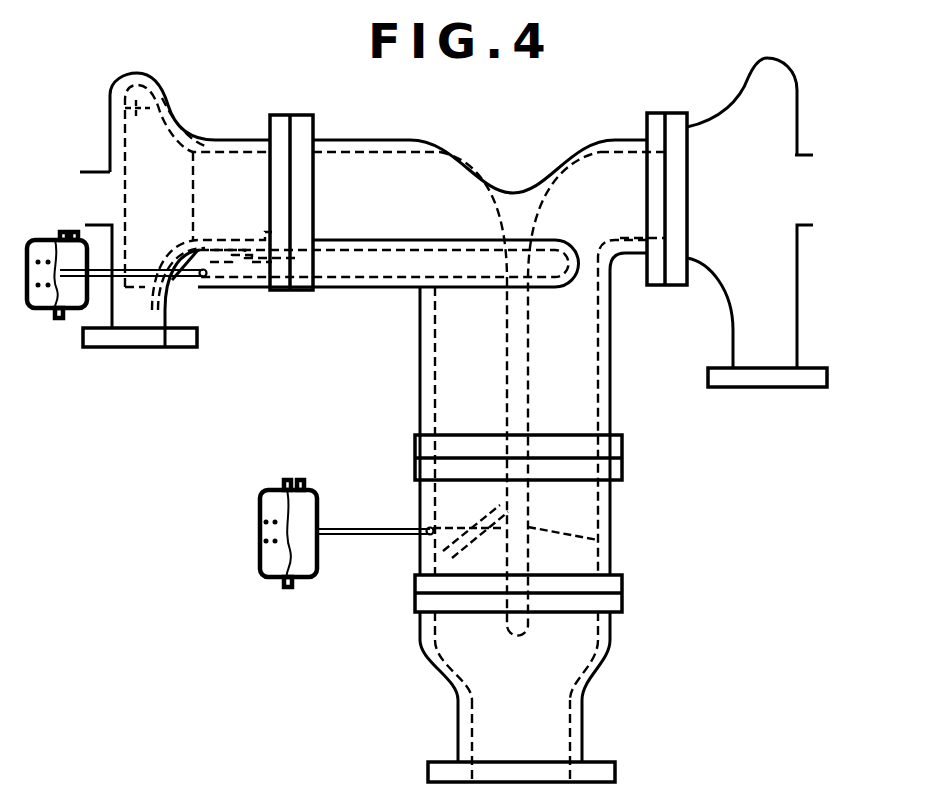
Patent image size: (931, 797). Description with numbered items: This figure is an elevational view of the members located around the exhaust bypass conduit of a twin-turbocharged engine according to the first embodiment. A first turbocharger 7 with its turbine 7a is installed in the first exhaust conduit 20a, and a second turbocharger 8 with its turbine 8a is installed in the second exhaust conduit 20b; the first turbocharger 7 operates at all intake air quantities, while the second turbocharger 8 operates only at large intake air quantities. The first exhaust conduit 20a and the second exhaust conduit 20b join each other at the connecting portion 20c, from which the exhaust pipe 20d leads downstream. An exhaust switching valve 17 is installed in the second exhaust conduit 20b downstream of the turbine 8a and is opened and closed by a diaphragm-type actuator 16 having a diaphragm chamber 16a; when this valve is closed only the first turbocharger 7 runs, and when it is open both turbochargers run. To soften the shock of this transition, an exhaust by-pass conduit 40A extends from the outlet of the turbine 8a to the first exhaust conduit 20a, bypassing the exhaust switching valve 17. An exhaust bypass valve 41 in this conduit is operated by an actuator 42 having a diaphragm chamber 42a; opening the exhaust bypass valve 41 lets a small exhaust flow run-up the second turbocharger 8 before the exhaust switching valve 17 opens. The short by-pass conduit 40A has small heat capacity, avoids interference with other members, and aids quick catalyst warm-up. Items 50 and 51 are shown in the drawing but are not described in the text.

The first turbocharger 7 is at (806, 165).
The turbine 7a is at (765, 110).
The second turbocharger 8 is at (92, 172).
The turbine 8a is at (136, 105).
The actuator 16 is at (258, 543).
The diaphragm chamber 16a is at (295, 612).
The exhaust switching valve 17 is at (605, 537).
The first exhaust conduit 20a is at (610, 393).
The second exhaust conduit 20b is at (440, 398).
The connecting portion 20c is at (520, 652).
The exhaust pipe 20d is at (520, 755).
The exhaust by-pass conduit 40A is at (352, 288).
The exhaust bypass valve 41 is at (245, 290).
The actuator 42 is at (50, 308).
The diaphragm chamber 42a is at (72, 318).
The pipe junction 50 is at (513, 190).
The flange 51 is at (613, 520).